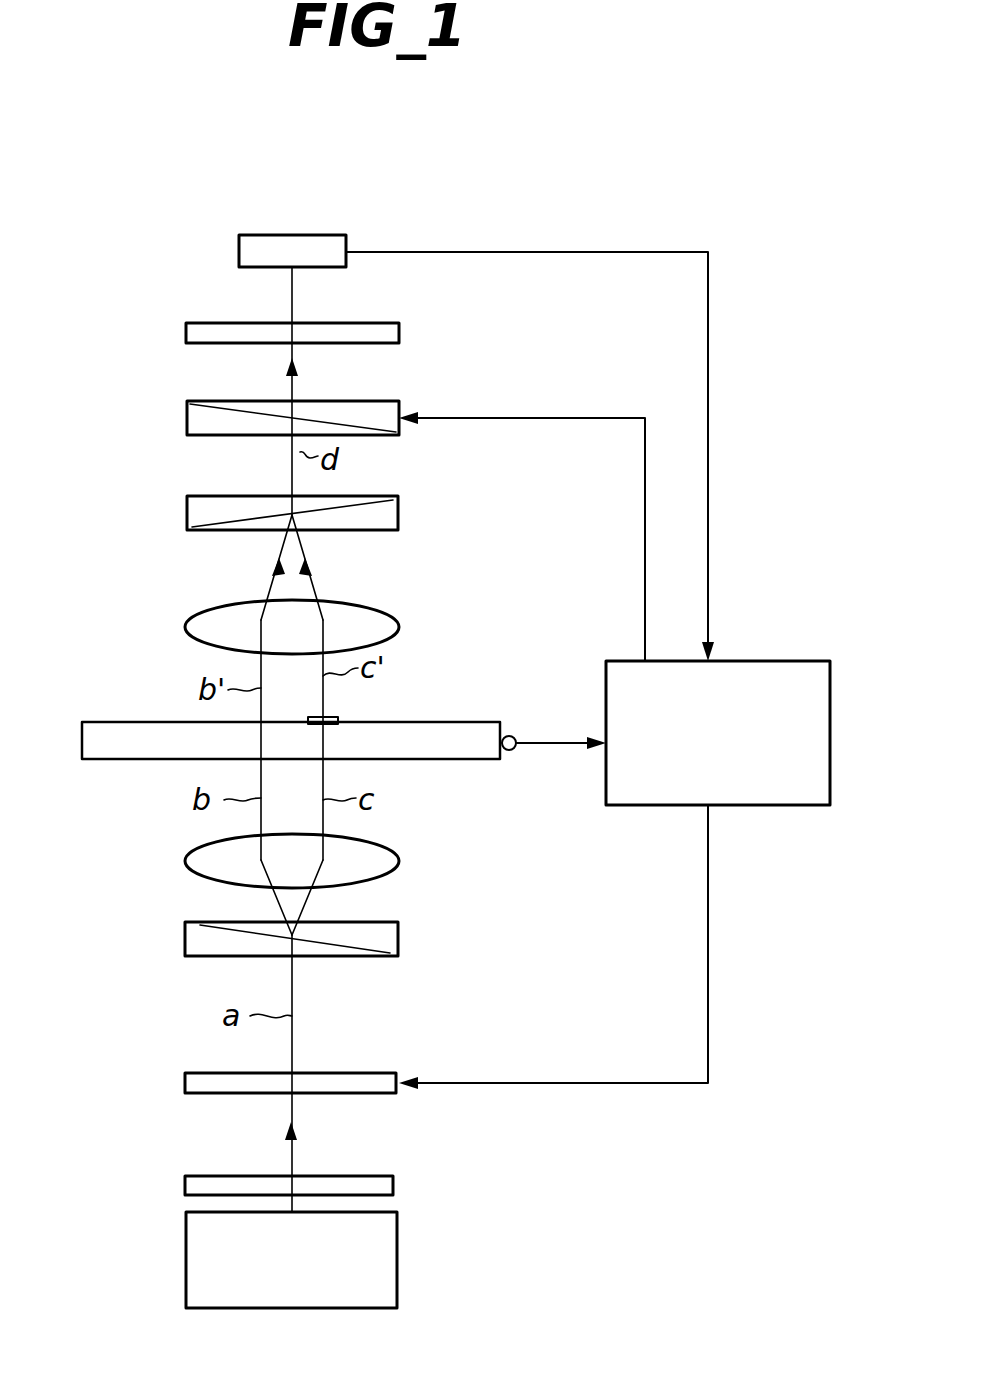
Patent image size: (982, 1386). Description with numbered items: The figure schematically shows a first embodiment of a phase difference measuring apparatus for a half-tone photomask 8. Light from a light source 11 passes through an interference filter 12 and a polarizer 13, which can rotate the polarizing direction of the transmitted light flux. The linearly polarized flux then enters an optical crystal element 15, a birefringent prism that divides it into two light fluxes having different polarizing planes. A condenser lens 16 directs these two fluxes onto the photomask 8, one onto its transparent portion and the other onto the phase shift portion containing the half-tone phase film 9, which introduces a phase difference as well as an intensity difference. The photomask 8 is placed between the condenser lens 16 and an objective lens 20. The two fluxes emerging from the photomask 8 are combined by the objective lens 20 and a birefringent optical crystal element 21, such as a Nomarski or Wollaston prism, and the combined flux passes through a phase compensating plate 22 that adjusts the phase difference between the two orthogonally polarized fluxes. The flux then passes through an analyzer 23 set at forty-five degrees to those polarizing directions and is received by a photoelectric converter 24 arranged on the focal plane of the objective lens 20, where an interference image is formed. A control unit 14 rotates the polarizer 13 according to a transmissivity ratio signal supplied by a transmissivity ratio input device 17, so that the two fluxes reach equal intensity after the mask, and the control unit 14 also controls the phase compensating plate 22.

The half-tone photomask 8 is at (100, 712).
The half-tone phase film 9 is at (338, 720).
The light source 11 is at (397, 1268).
The interference filter 12 is at (393, 1186).
The polarizer 13 is at (372, 1073).
The control unit 14 is at (780, 661).
The optical crystal element 15 is at (185, 940).
The condenser lens 16 is at (186, 862).
The transmissivity ratio input device 17 is at (511, 736).
The objective lens 20 is at (190, 616).
The optical crystal element 21 is at (187, 518).
The phase compensating plate 22 is at (187, 419).
The analyzer 23 is at (186, 332).
The photoelectric converter 24 is at (312, 235).